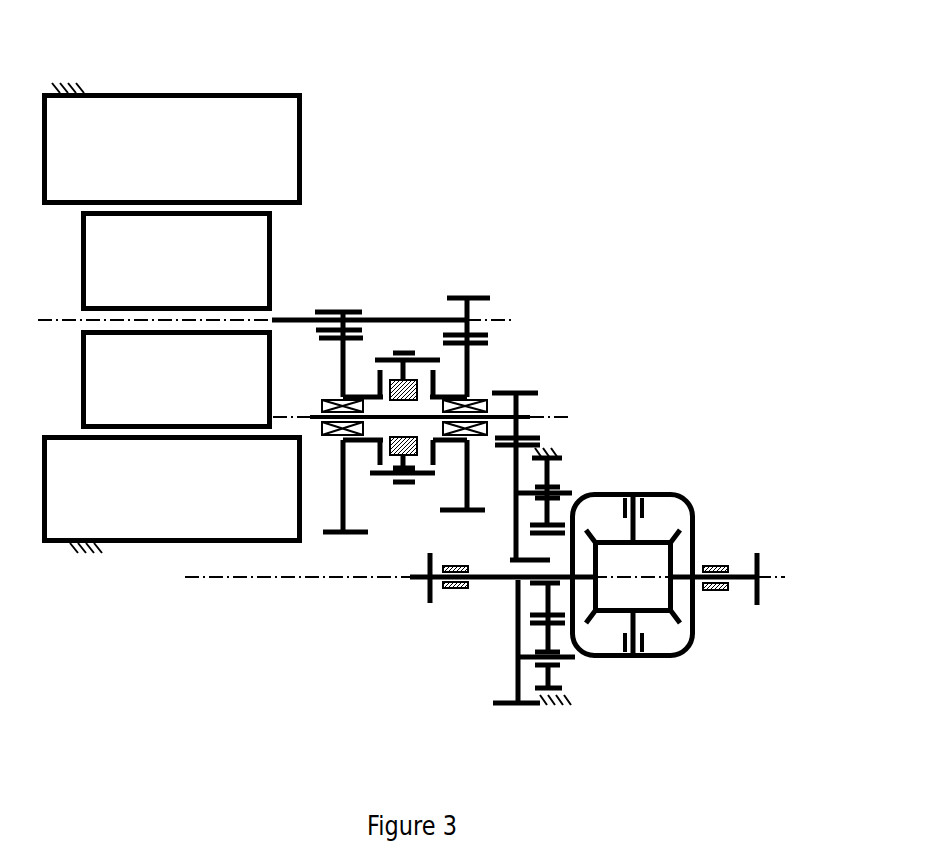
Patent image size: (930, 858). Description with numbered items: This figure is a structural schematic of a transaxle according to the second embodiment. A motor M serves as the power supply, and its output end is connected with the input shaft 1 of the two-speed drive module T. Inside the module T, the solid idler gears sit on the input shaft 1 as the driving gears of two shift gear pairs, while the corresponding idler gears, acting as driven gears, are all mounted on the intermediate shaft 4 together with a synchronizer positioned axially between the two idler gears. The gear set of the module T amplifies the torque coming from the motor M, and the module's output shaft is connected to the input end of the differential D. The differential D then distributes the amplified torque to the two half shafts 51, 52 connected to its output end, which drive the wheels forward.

The motor M is at (180, 110).
The two-speed drive module T is at (506, 188).
The input shaft 1 is at (389, 314).
The intermediate shaft 4 is at (506, 393).
The differential D is at (610, 513).
The half shaft 51 is at (483, 585).
The half shaft 52 is at (735, 583).